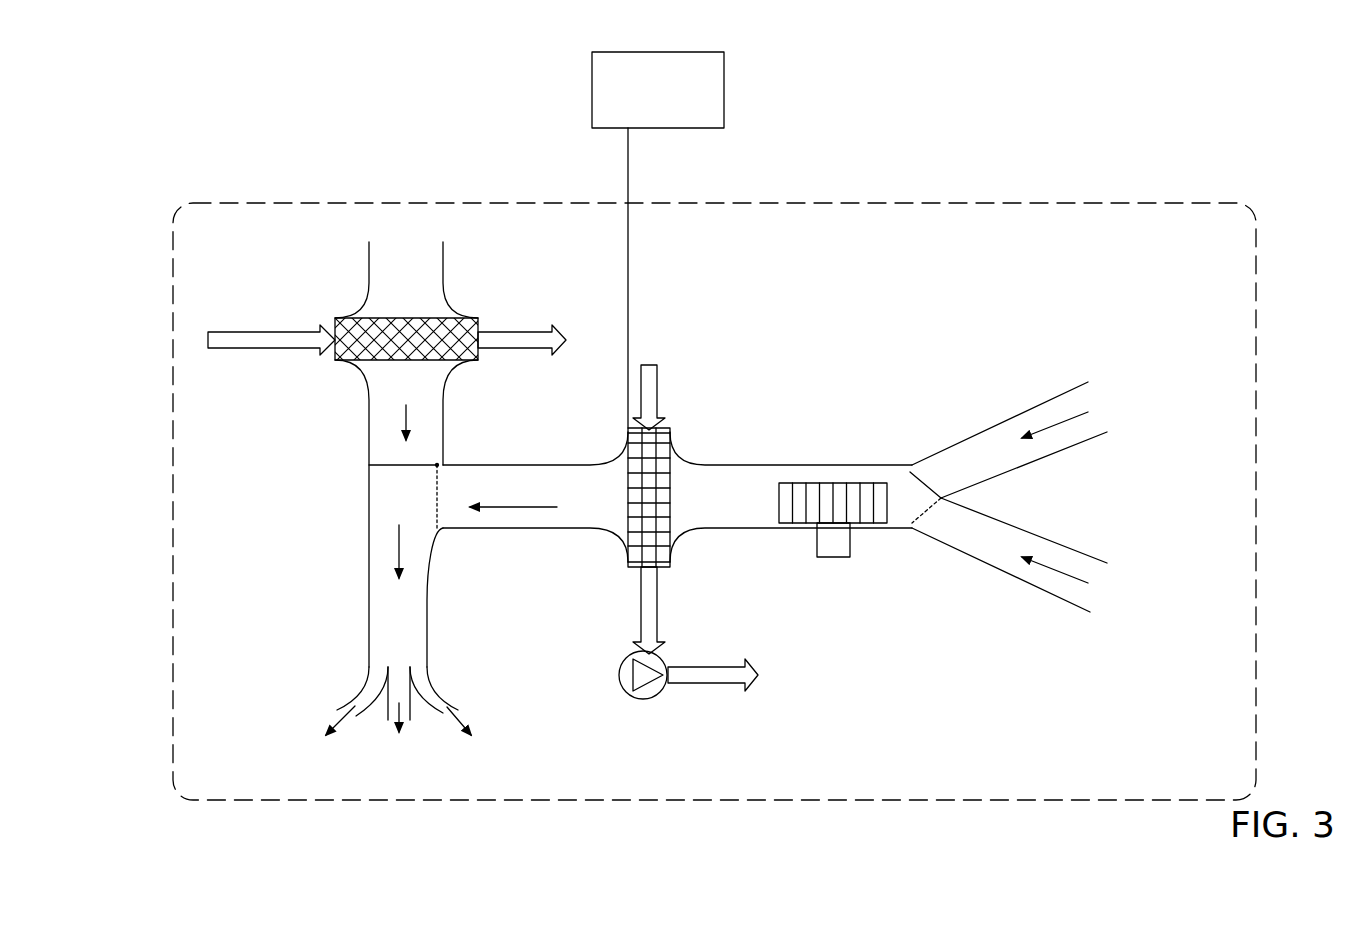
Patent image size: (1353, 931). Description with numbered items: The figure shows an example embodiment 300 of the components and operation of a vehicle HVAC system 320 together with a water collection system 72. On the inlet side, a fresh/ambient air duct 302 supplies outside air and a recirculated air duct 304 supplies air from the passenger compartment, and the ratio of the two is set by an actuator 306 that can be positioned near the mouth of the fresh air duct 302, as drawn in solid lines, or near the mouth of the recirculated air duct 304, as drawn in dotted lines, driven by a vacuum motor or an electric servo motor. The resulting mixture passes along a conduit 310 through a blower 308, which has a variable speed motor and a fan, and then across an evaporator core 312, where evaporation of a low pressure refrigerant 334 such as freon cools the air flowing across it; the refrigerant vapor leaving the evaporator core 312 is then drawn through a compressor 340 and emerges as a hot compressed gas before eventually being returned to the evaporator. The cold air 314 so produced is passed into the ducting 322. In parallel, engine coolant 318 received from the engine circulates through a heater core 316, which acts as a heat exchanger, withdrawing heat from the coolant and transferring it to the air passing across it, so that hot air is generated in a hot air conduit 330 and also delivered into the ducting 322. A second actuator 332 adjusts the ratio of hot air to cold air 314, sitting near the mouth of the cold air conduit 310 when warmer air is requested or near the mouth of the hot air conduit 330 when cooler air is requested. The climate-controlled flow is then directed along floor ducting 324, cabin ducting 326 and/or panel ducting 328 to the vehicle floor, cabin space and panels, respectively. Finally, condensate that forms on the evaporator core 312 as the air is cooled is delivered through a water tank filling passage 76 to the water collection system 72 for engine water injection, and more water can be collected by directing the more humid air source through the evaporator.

The example embodiment 300 is at (148, 78).
The water collection system 72 is at (646, 101).
The water tank filling passage 76 is at (630, 232).
The HVAC system 320 is at (1066, 203).
The fresh/ambient air duct 302 is at (1046, 400).
The recirculated air duct 304 is at (1026, 585).
The actuator 306 is at (935, 490).
The blower 308 is at (797, 525).
The conduit 310 is at (748, 463).
The evaporator core 312 is at (660, 433).
The cold air 314 is at (508, 508).
The heater core 316 is at (372, 318).
The engine coolant 318 is at (275, 350).
The ducting 322 is at (428, 612).
The floor ducting 324 is at (360, 682).
The cabin ducting 326 is at (398, 667).
The panel ducting 328 is at (438, 685).
The hot air conduit 330 is at (369, 422).
The actuator 332 is at (392, 467).
The refrigerant 334 is at (662, 376).
The compressor 340 is at (660, 657).